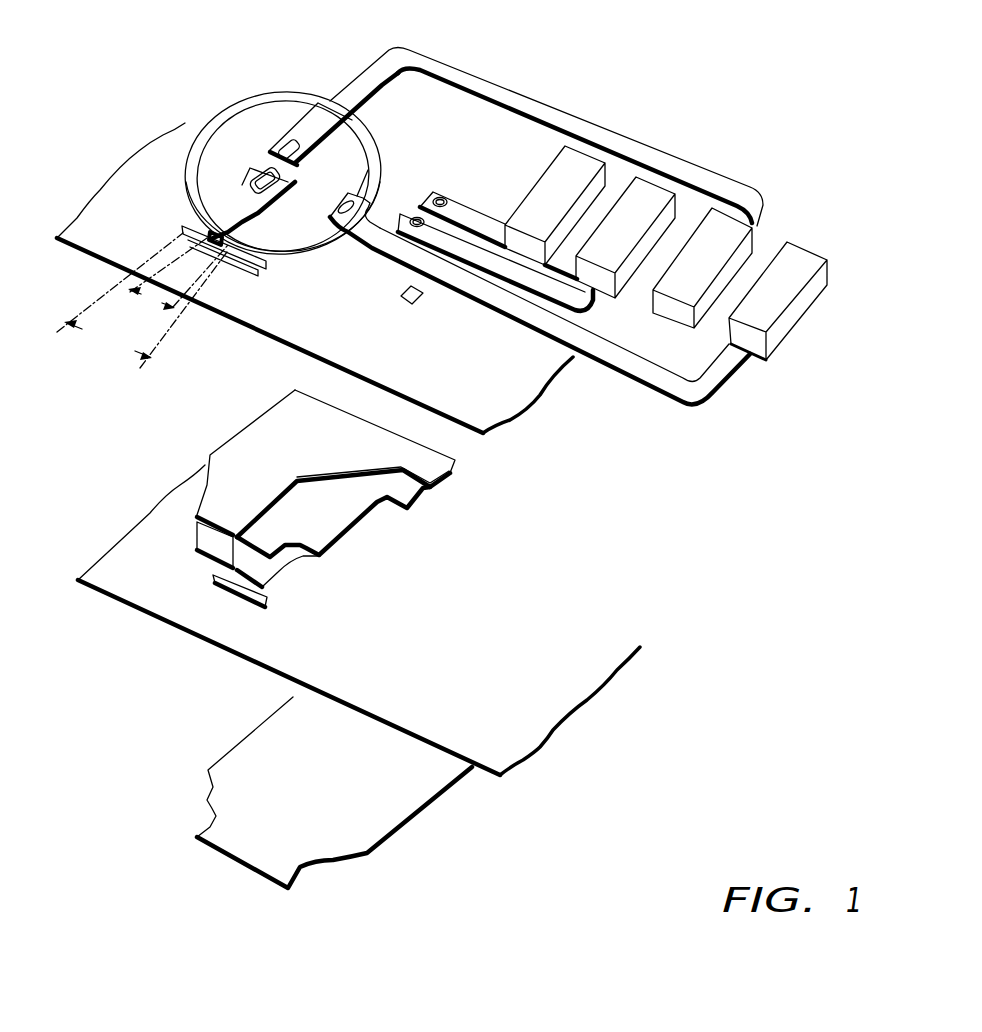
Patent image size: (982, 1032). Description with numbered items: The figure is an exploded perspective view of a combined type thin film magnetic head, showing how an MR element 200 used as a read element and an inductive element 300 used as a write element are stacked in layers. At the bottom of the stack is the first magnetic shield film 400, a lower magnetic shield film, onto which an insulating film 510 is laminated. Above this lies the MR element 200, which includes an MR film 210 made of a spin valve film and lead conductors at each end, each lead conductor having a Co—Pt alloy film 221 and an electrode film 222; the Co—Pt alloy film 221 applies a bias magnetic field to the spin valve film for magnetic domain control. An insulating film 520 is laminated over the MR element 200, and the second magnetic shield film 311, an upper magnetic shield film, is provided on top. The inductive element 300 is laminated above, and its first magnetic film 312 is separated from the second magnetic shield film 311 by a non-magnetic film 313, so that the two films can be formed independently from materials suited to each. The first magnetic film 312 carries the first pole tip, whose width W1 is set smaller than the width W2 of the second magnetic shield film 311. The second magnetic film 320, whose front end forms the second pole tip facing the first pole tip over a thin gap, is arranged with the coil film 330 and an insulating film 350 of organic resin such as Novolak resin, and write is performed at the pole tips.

The inductive element 300 is at (270, 95).
The coil film 330 is at (253, 135).
The insulating film 350 is at (283, 175).
The second magnetic film 320 is at (243, 202).
The non-magnetic film 313 is at (207, 240).
The second magnetic shield film 311 is at (268, 268).
The first magnetic film 312 is at (240, 268).
The width of the first pole tip W1 is at (160, 302).
The width of the second magnetic shield film W2 is at (122, 347).
The insulating film 520 is at (490, 397).
The MR element 200 is at (350, 498).
The electrode film 222 is at (260, 433).
The Co—Pt alloy film 221 is at (333, 520).
The MR film 210 is at (207, 567).
The insulating film 510 is at (517, 733).
The first magnetic shield film 400 is at (218, 803).